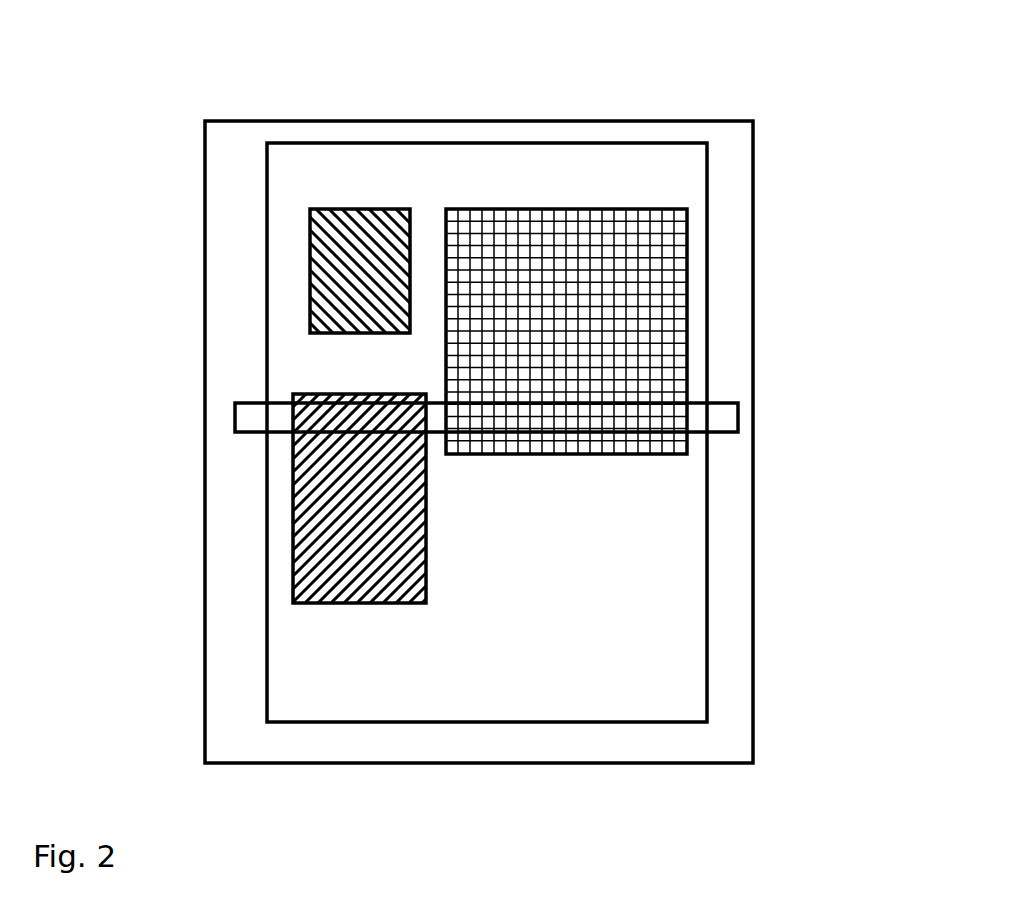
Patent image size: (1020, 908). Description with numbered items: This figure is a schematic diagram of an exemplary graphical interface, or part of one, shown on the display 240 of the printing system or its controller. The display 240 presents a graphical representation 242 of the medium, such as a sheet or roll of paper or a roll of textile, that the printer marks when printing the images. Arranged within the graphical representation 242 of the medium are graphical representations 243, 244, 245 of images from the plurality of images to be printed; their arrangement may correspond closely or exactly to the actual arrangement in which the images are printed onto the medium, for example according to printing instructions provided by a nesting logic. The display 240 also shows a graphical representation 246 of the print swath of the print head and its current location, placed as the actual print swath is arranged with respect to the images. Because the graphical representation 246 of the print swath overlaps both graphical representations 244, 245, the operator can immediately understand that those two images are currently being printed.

The display 240 is at (753, 497).
The graphical representation of a medium 242 is at (267, 468).
The graphical representation of an image 243 is at (357, 209).
The graphical representation of an image 244 is at (546, 209).
The graphical representation of an image 245 is at (293, 554).
The graphical representation of a print swath 246 is at (687, 413).